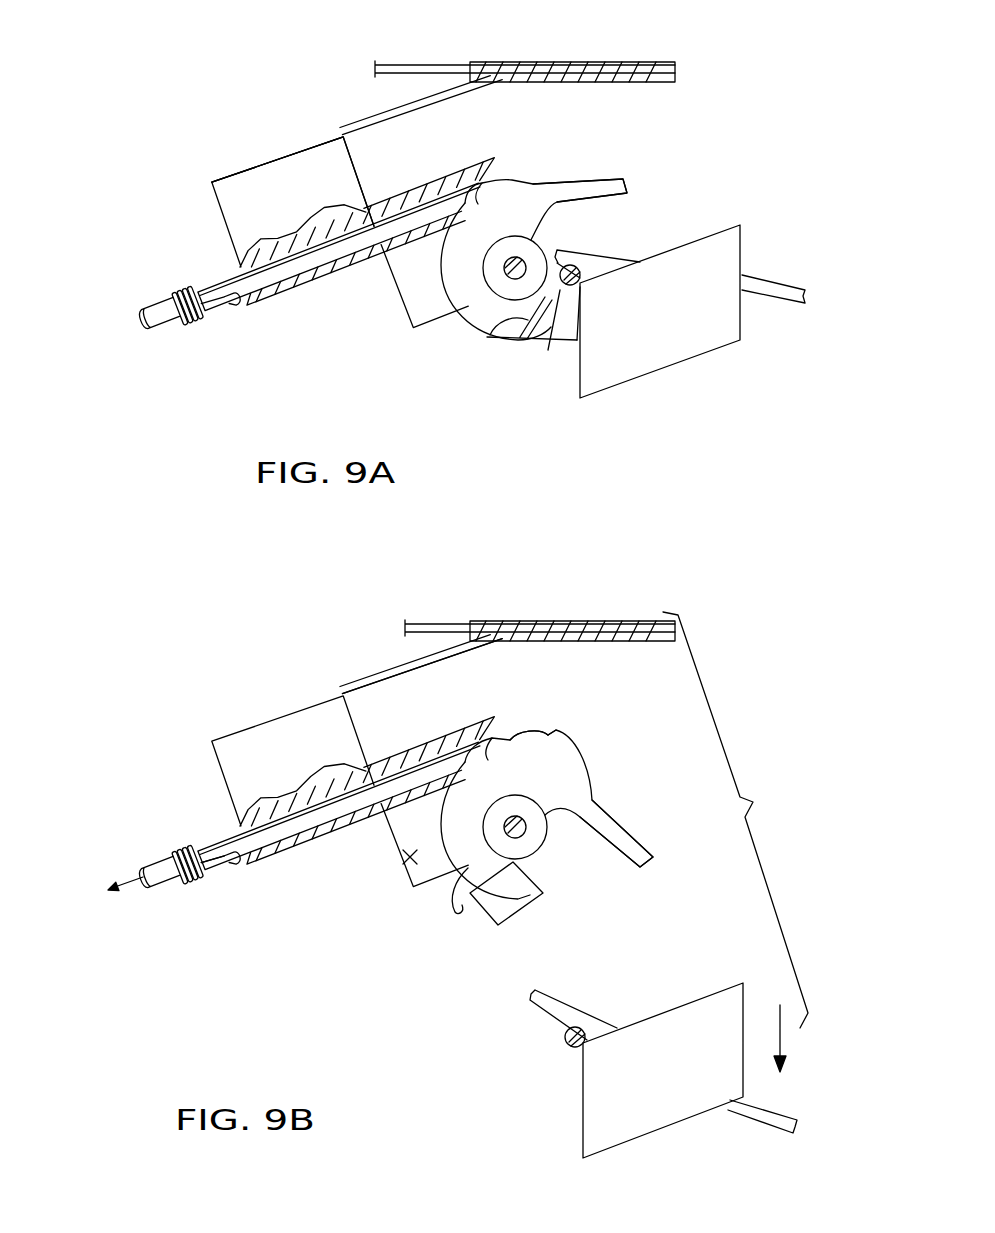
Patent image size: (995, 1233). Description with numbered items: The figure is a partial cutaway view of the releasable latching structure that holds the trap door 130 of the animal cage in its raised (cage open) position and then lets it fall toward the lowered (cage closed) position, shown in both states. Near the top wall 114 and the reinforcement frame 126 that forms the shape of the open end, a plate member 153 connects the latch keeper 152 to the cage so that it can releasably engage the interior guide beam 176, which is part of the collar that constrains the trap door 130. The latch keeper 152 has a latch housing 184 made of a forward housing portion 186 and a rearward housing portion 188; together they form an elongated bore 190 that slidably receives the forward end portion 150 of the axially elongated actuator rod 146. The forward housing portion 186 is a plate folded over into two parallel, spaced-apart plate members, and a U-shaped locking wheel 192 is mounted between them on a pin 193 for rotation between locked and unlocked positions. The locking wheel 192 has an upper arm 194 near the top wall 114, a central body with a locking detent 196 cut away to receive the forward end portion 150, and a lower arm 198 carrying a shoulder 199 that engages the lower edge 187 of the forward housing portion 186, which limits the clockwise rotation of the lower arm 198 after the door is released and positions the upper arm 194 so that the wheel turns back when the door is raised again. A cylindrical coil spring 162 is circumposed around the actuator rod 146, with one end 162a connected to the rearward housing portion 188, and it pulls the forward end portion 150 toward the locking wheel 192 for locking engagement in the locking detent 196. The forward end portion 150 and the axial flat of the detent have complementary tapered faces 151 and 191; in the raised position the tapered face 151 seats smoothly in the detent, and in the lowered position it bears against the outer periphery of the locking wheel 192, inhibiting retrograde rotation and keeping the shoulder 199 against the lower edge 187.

In FIG. 9A, the top wall 114 is at (418, 62).
In FIG. 9B, the top wall 114 is at (540, 628).
In FIG. 9A, the reinforcement frame 126 is at (535, 62).
In FIG. 9B, the reinforcement frame 126 is at (572, 631).
In FIG. 9A, the trap door 130 is at (768, 276).
In FIG. 9B, the trap door 130 is at (550, 1005).
In FIG. 9A, the actuator rod 146 is at (157, 308).
In FIG. 9B, the actuator rod 146 is at (162, 863).
In FIG. 9A, the forward end portion 150 is at (300, 263).
In FIG. 9B, the forward end portion 150 is at (333, 808).
In FIG. 9A, the tapered face 151 is at (514, 178).
In FIG. 9B, the tapered face 151 is at (513, 740).
In FIG. 9A, the latch keeper 152 is at (170, 177).
In FIG. 9A, the plate member 153 is at (377, 125).
In FIG. 9B, the plate member 153 is at (421, 662).
In FIG. 9B, the coil spring 162 is at (190, 845).
In FIG. 9B, the end of coil spring 162a is at (208, 880).
In FIG. 9A, the guide beam 176 is at (558, 292).
In FIG. 9B, the guide beam 176 is at (565, 1043).
In FIG. 9A, the latch housing 184 is at (228, 173).
In FIG. 9A, the forward housing portion 186 is at (416, 305).
In FIG. 9B, the forward housing portion 186 is at (393, 747).
In FIG. 9B, the lower edge 187 is at (413, 858).
In FIG. 9A, the rearward housing portion 188 is at (283, 172).
In FIG. 9B, the rearward housing portion 188 is at (243, 750).
In FIG. 9A, the elongated bore 190 is at (272, 283).
In FIG. 9B, the elongated bore 190 is at (282, 842).
In FIG. 9B, the tapered face 191 is at (545, 733).
In FIG. 9A, the locking wheel 192 is at (537, 186).
In FIG. 9B, the locking wheel 192 is at (587, 781).
In FIG. 9A, the pin 193 is at (515, 268).
In FIG. 9B, the pin 193 is at (515, 827).
In FIG. 9A, the upper arm 194 is at (625, 181).
In FIG. 9B, the upper arm 194 is at (623, 833).
In FIG. 9B, the locking detent 196 is at (556, 733).
In FIG. 9B, the lower arm 198 is at (507, 900).
In FIG. 9A, the shoulder 199 is at (505, 330).
In FIG. 9B, the shoulder 199 is at (468, 888).